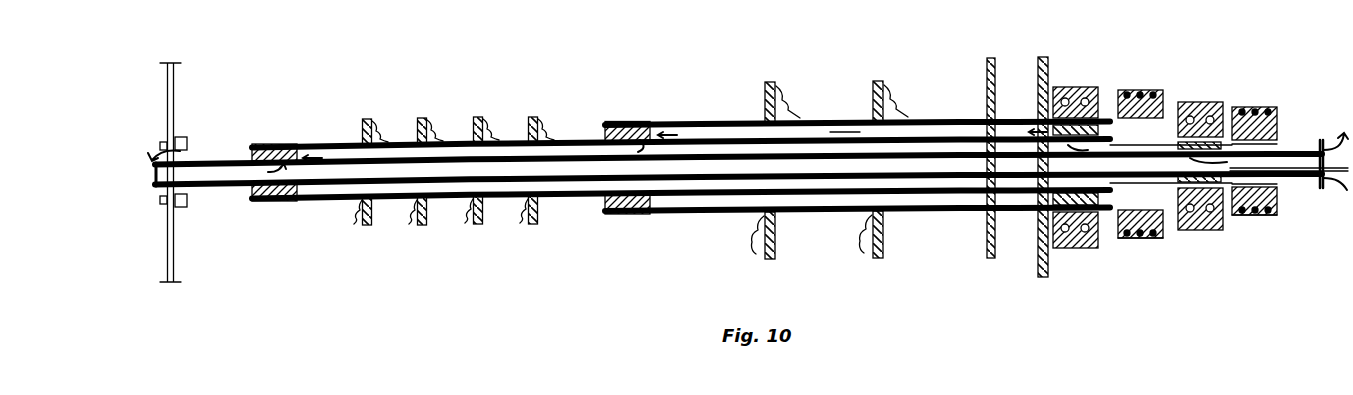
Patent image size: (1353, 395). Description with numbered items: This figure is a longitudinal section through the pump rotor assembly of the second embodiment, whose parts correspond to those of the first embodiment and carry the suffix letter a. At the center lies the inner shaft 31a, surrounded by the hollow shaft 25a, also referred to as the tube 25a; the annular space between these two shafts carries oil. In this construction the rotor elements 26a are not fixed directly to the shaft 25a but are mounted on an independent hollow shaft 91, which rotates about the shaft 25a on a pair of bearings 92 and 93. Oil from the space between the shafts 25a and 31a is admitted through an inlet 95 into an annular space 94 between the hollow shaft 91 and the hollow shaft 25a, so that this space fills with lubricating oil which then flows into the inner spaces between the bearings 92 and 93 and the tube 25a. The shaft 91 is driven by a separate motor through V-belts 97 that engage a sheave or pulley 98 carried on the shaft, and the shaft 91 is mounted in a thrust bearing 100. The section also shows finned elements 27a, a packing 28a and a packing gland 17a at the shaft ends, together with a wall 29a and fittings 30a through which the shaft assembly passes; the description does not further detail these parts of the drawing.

The packing gland 17a is at (1250, 222).
The shaft 25a is at (322, 206).
The rotor elements 26a is at (877, 82).
The tube fin 27a is at (422, 118).
The packing 28a is at (1205, 108).
The wall 29a is at (178, 96).
The wall fitting 30a is at (181, 139).
The shaft 31a is at (208, 190).
The independent shaft 91 is at (690, 122).
The bearing 92 is at (602, 134).
The bearing 93 is at (1112, 118).
The annular space 94 is at (832, 136).
The inlet 95 is at (641, 136).
The V-belts 97 is at (1142, 240).
The sheave or pulley 98 is at (1165, 102).
The thrust bearing 100 is at (1058, 88).